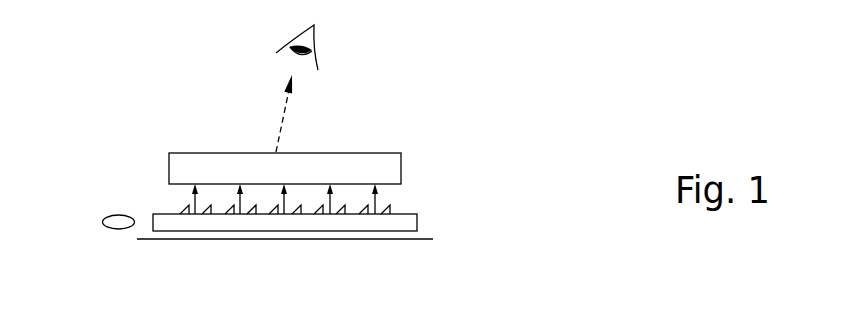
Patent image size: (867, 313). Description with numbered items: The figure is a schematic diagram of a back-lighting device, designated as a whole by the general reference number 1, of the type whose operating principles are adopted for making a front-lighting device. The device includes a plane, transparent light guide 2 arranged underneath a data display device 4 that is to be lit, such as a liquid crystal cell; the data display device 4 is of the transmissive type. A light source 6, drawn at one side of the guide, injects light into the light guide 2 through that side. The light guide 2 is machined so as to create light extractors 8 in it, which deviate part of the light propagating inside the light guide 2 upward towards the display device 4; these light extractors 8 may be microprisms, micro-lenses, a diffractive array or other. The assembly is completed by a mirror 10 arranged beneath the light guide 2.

The back-lighting device 1 is at (98, 194).
The light guide 2 is at (417, 225).
The data display device 4 is at (395, 172).
The light source 6 is at (113, 226).
The light extractors 8 is at (183, 211).
The mirror 10 is at (402, 239).